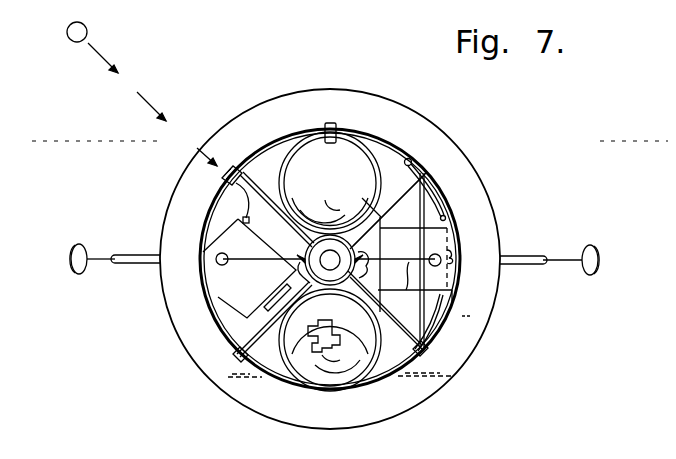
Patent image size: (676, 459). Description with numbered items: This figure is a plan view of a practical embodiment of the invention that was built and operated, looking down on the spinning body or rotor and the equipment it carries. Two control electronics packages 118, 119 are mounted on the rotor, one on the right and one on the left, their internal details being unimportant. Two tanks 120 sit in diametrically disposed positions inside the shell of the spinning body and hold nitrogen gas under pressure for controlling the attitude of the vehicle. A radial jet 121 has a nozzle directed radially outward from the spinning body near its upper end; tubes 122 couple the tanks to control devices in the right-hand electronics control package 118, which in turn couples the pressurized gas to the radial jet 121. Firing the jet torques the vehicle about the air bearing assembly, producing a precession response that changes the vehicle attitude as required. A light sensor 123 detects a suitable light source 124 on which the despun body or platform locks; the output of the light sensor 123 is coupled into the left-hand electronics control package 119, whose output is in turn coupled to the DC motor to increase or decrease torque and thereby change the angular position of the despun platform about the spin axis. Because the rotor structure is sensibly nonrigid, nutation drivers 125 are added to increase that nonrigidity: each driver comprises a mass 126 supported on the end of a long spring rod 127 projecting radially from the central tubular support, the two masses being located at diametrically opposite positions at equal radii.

The control electronics package 118 is at (448, 225).
The control electronics package 119 is at (233, 283).
The tank 120 is at (358, 162).
The radial jet 121 is at (333, 125).
The tube 122 is at (412, 161).
The light sensor 123 is at (230, 166).
The light source 124 is at (88, 36).
The nutation driver 125 is at (282, 259).
The mass 126 is at (441, 257).
The spring rod 127 is at (402, 288).